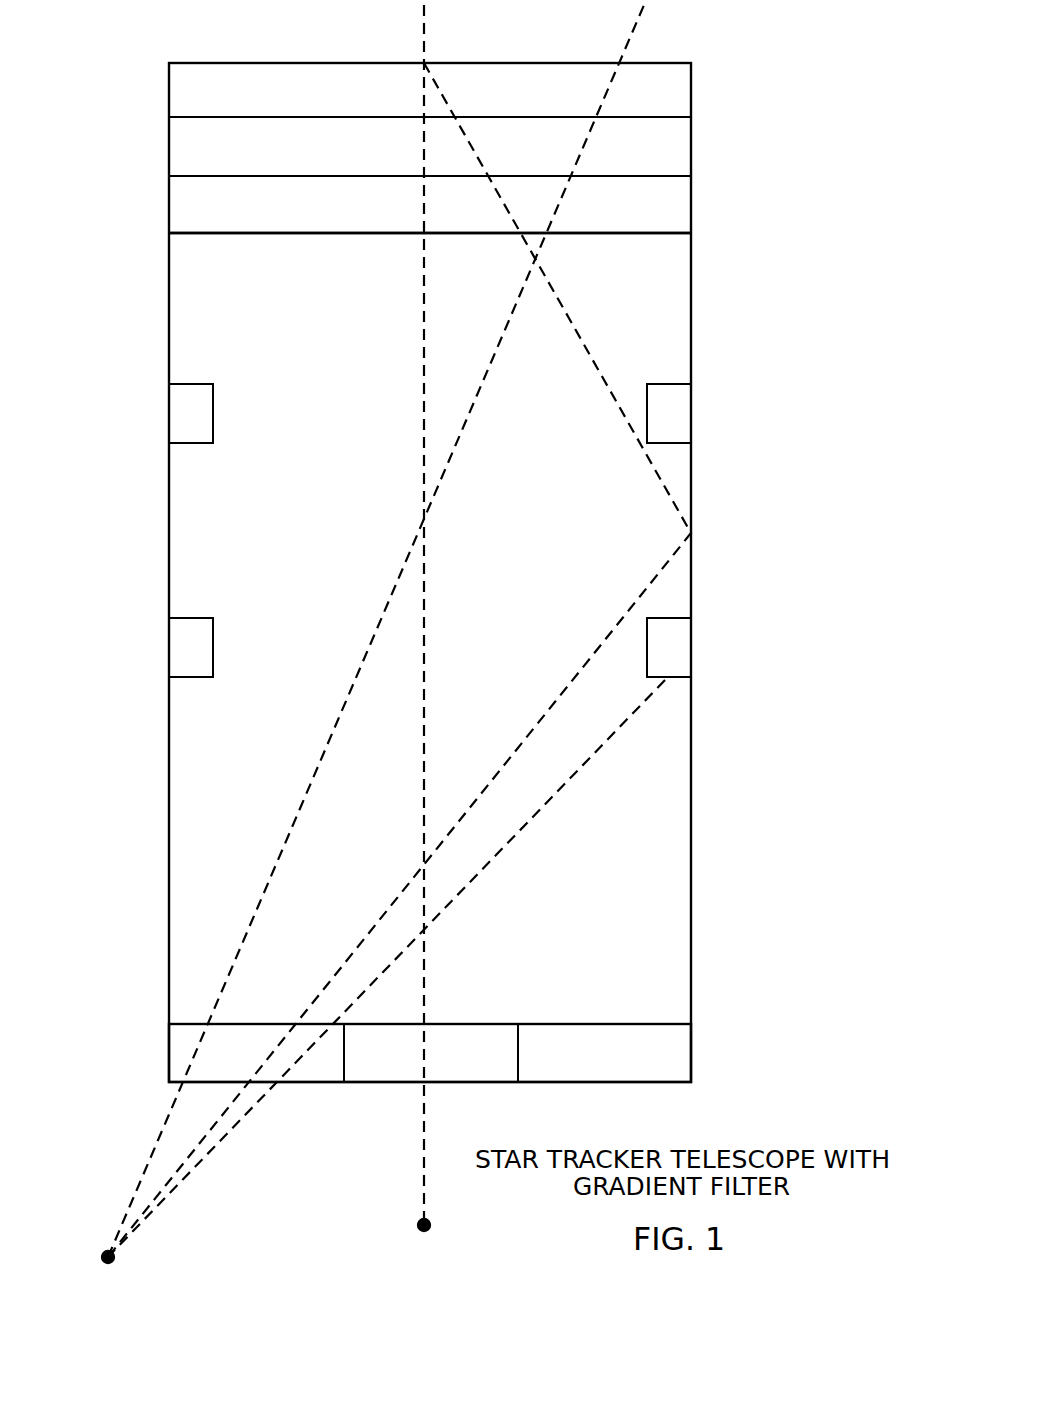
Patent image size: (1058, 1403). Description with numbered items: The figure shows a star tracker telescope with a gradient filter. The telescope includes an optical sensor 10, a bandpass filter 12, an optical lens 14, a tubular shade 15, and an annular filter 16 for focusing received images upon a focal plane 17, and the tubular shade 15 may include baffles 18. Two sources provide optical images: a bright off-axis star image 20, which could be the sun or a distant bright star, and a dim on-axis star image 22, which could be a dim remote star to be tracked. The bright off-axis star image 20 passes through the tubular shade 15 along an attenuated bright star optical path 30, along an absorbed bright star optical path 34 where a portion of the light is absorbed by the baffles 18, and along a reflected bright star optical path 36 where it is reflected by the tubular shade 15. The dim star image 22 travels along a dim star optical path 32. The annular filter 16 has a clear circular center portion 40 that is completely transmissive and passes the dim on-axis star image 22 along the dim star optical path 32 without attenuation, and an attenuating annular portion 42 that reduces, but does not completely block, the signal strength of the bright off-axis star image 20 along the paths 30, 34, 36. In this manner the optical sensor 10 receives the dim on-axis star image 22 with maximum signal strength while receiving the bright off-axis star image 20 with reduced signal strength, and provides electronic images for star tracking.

The optical sensor 10 is at (691, 73).
The bandpass filter 12 is at (691, 145).
The optical lens 14 is at (691, 218).
The tubular shade 15 is at (691, 808).
The annular filter 16 is at (691, 1052).
The focal plane 17 is at (286, 235).
The baffles 18 is at (691, 400).
The bright off-axis star image 20 is at (101, 1258).
The dim on-axis star image 22 is at (416, 1226).
The attenuated bright star optical path 30 is at (355, 683).
The dim star optical path 32 is at (425, 575).
The absorbed bright star optical path 34 is at (548, 800).
The reflected bright star optical path 36 is at (626, 612).
The clear circular center portion 40 is at (453, 1024).
The attenuating annular portion 42 is at (570, 1024).